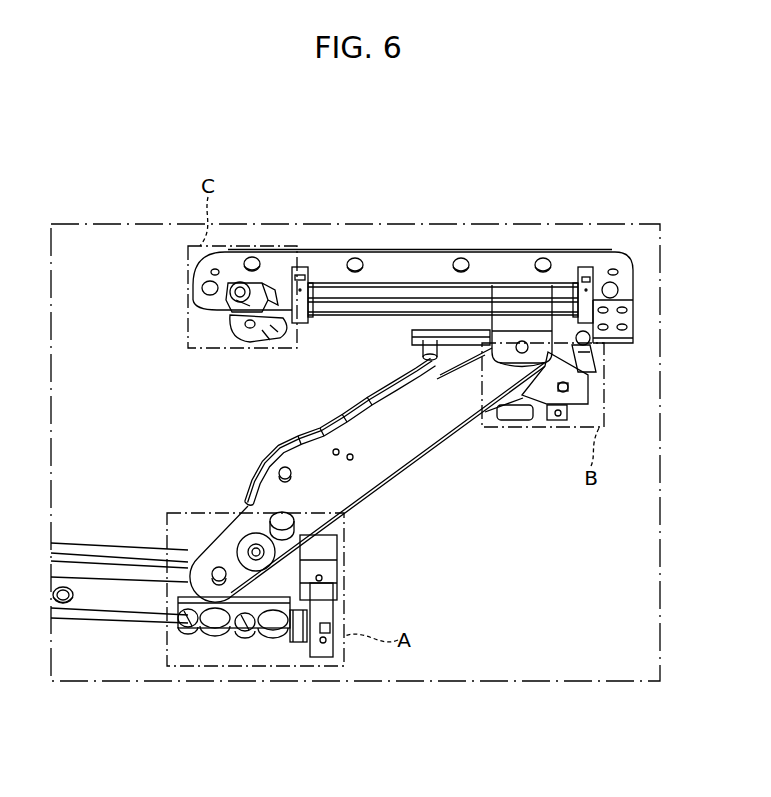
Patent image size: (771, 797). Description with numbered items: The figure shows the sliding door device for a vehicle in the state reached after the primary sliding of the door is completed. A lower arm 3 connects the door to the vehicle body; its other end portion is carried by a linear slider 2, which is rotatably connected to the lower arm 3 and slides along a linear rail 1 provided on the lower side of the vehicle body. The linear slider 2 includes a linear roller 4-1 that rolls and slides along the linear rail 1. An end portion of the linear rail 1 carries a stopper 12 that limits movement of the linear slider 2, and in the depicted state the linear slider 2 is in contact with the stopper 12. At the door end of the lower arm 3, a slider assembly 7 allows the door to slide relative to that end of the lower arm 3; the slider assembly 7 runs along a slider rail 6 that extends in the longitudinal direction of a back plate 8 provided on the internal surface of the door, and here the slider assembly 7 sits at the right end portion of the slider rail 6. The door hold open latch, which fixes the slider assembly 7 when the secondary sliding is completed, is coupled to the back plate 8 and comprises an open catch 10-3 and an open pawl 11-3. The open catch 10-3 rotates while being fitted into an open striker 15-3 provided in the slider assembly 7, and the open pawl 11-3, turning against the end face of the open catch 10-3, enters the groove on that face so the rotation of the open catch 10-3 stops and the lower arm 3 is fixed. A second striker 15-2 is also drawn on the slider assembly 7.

The linear rail 1 is at (104, 600).
The linear slider 2 is at (176, 598).
The lower arm 3 is at (407, 447).
The linear roller 4-1 is at (190, 635).
The slider rail 6 is at (485, 308).
The slider assembly 7 is at (580, 388).
The back plate 8 is at (328, 262).
The open catch 10-3 is at (249, 336).
The open pawl 11-3 is at (258, 290).
The stopper 12 is at (303, 640).
The second sensor 15-2 is at (592, 345).
The open striker 15-3 is at (426, 340).